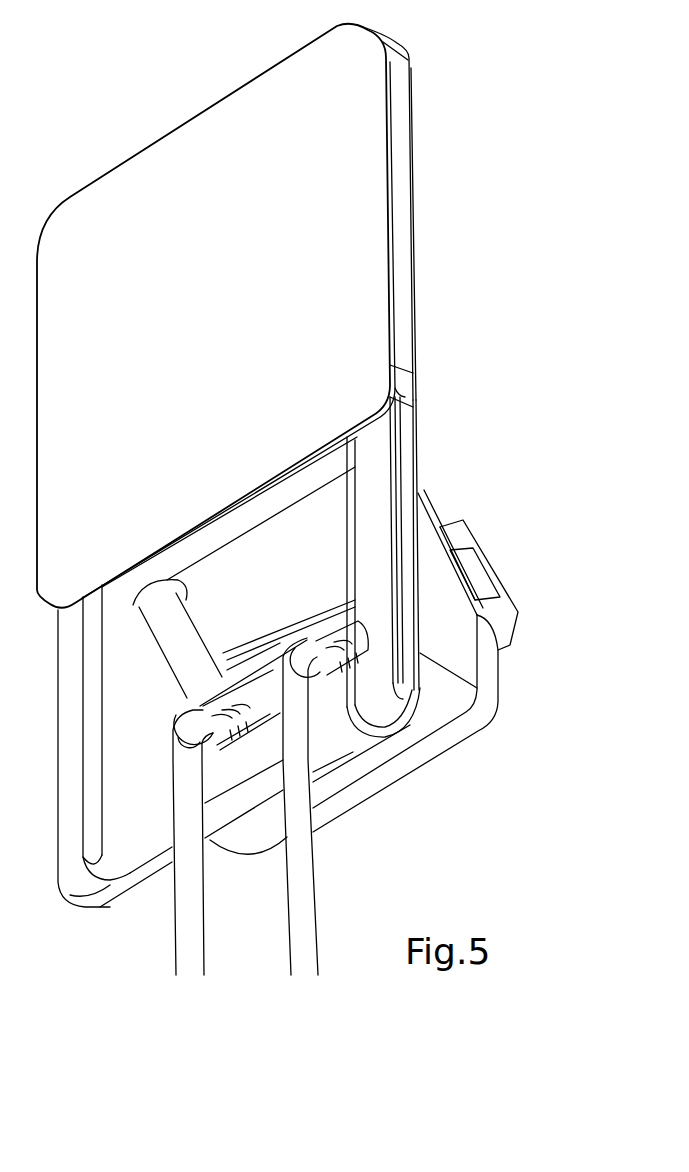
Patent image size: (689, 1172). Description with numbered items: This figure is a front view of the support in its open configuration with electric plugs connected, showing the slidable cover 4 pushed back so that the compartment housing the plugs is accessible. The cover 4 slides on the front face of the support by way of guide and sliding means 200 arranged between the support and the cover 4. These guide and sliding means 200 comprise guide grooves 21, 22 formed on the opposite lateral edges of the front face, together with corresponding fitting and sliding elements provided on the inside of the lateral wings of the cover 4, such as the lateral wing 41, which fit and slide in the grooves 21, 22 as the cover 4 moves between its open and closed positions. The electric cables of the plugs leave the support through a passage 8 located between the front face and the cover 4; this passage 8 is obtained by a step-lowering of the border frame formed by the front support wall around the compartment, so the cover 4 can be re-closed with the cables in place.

The cover 4 is at (243, 300).
The guide and sliding means 200 is at (453, 397).
The lateral wing 41 is at (410, 415).
The guide groove 21 is at (408, 474).
The guide groove 22 is at (57, 885).
The passage 8 is at (323, 755).